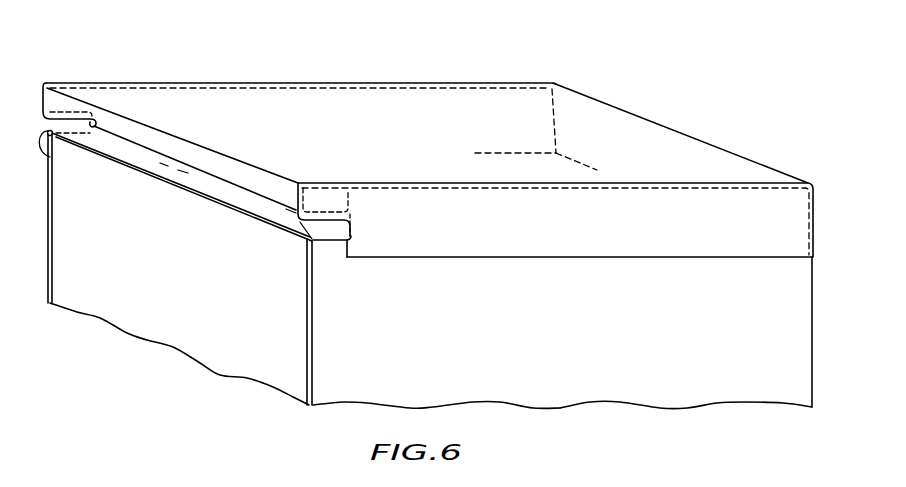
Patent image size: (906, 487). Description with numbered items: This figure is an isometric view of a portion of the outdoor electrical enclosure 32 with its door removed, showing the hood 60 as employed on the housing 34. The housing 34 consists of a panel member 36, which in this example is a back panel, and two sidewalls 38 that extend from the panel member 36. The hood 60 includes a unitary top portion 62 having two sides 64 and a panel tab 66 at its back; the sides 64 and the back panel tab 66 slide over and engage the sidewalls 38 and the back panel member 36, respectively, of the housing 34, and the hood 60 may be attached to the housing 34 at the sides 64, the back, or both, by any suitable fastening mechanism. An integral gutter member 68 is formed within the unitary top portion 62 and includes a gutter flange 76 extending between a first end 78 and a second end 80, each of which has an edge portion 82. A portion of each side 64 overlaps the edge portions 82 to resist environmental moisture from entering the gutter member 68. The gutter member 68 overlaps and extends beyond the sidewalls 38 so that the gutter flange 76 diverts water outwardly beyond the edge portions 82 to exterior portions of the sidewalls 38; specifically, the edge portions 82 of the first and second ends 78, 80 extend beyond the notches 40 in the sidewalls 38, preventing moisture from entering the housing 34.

The outdoor electrical enclosure 32 is at (293, 293).
The housing 34 is at (688, 379).
The panel member 36 is at (812, 292).
The sidewalls 38 is at (686, 380).
The notches 40 is at (305, 239).
The hood 60 is at (612, 95).
The unitary top portion 62 is at (347, 108).
The sides 64 is at (248, 82).
The panel tab 66 is at (677, 132).
The integral gutter member 68 is at (117, 163).
The gutter flange 76 is at (204, 189).
The first end 78 is at (343, 243).
The second end 80 is at (41, 87).
The edge portion 82 is at (51, 162).